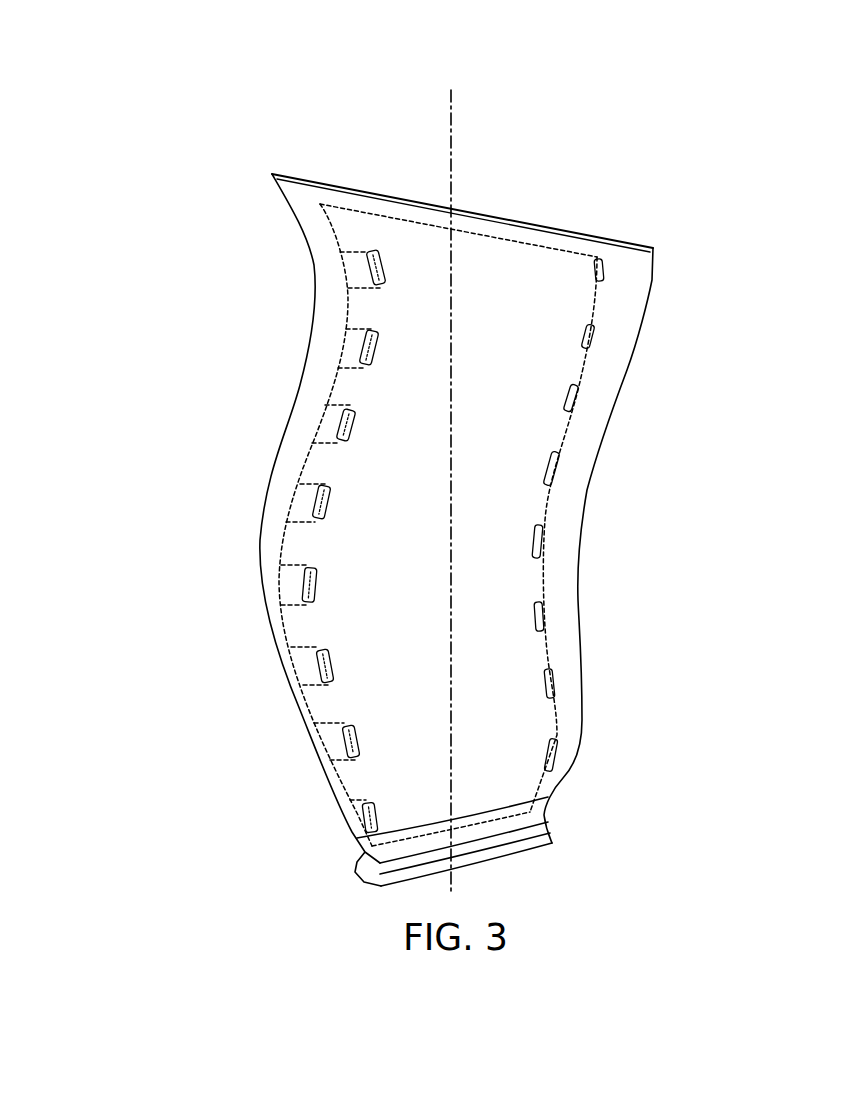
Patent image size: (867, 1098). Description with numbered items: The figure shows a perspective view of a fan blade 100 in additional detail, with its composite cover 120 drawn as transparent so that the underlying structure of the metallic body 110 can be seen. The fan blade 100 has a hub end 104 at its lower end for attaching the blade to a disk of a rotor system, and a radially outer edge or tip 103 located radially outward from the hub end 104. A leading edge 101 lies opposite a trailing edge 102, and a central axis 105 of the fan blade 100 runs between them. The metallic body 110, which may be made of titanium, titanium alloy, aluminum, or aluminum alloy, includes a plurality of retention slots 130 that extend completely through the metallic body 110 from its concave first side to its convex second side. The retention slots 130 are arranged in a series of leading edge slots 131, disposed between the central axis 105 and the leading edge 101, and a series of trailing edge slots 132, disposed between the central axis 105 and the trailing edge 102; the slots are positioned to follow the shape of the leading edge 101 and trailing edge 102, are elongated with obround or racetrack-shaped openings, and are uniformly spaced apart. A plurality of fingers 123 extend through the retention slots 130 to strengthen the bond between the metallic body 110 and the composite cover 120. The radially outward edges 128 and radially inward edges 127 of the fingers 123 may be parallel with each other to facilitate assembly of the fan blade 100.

The fan blade 100 is at (192, 70).
The leading edge 101 is at (284, 430).
The trailing edge 102 is at (587, 490).
The tip 103 is at (373, 193).
The hub end 104 is at (497, 853).
The central axis 105 is at (452, 127).
The metallic body 110 is at (327, 318).
The composite cover 120 is at (532, 237).
The fingers 123 is at (363, 273).
The radially inward edges 127 is at (358, 372).
The radially outward edges 128 is at (356, 328).
The retention slots 130 is at (347, 444).
The leading edge slots 131 is at (373, 233).
The trailing edge slots 132 is at (600, 258).